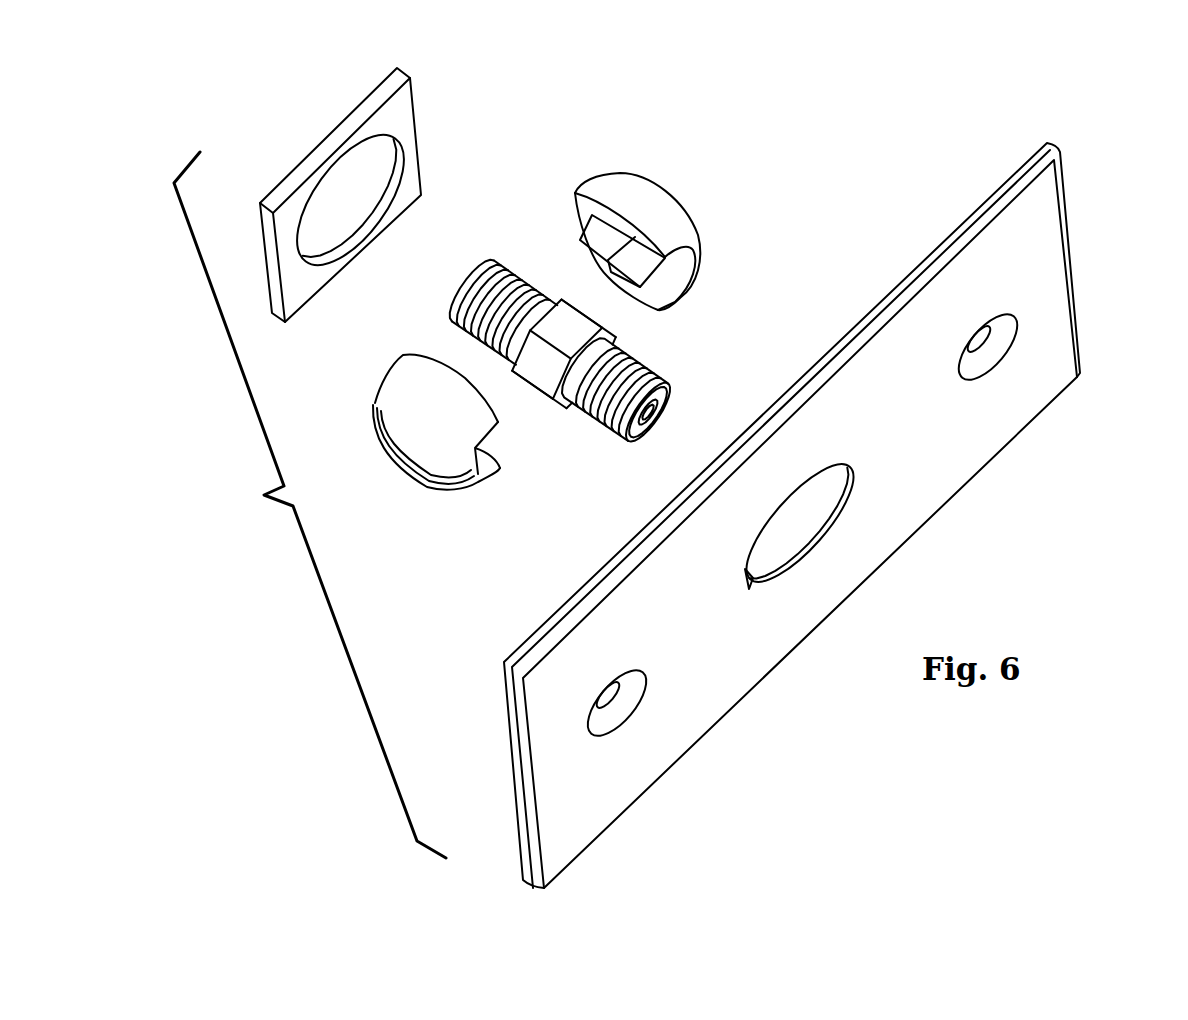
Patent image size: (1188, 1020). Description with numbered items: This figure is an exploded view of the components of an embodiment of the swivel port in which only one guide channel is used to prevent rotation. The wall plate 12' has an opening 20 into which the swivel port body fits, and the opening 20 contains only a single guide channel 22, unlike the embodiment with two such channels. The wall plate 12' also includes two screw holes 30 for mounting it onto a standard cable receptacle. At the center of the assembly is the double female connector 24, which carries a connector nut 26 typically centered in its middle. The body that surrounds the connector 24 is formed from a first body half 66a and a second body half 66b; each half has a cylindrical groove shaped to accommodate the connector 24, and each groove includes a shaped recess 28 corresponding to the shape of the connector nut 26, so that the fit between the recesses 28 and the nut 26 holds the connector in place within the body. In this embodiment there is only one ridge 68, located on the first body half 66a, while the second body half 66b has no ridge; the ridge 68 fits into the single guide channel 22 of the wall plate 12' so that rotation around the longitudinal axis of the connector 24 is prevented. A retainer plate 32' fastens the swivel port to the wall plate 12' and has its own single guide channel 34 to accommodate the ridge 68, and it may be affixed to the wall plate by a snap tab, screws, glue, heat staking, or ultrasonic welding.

The wall plate 12' is at (832, 515).
The opening 20 is at (820, 527).
The guide channel 22 is at (748, 573).
The double female connector 24 is at (595, 387).
The connector nut 26 is at (530, 372).
The shaped recess 28 is at (637, 268).
The screw holes 30 is at (617, 703).
The retainer plate 32' is at (362, 191).
The guide channel 34 is at (297, 253).
The first body half 66a is at (410, 426).
The second body half 66b is at (680, 237).
The ridge 68 is at (404, 477).